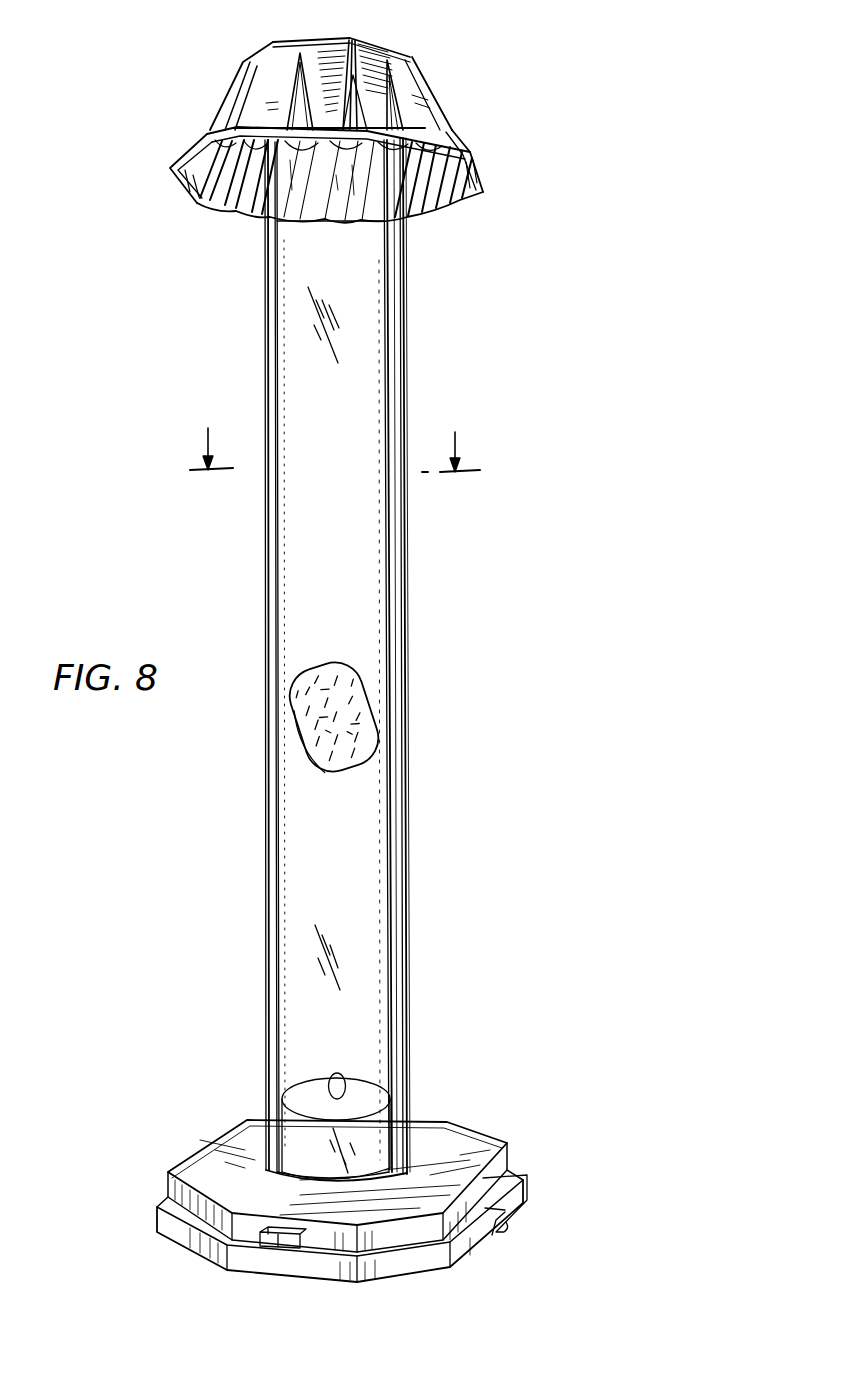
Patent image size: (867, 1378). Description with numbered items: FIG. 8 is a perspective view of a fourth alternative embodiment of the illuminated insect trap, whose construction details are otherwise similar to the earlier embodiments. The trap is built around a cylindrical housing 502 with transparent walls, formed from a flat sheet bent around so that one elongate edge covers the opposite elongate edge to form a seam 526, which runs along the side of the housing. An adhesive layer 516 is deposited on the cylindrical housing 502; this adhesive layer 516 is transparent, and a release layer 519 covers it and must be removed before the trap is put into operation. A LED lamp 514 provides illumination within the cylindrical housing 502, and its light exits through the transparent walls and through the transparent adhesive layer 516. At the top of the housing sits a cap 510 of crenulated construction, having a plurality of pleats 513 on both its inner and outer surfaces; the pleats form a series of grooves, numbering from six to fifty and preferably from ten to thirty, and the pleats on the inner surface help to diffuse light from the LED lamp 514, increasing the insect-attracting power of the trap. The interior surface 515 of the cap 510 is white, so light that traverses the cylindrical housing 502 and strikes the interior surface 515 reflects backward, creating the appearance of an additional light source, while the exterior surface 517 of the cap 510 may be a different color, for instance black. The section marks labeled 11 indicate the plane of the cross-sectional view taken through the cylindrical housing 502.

The cylindrical housing 502 is at (275, 857).
The cap 510 is at (413, 55).
The pleats 513 is at (385, 218).
The LED lamp 514 is at (341, 1076).
The interior surface 515 is at (220, 206).
The adhesive layer 516 is at (352, 713).
The exterior surface 517 is at (222, 116).
The release layer 519 is at (368, 622).
The seam 526 is at (405, 545).
The section line 11- 11 is at (335, 435).